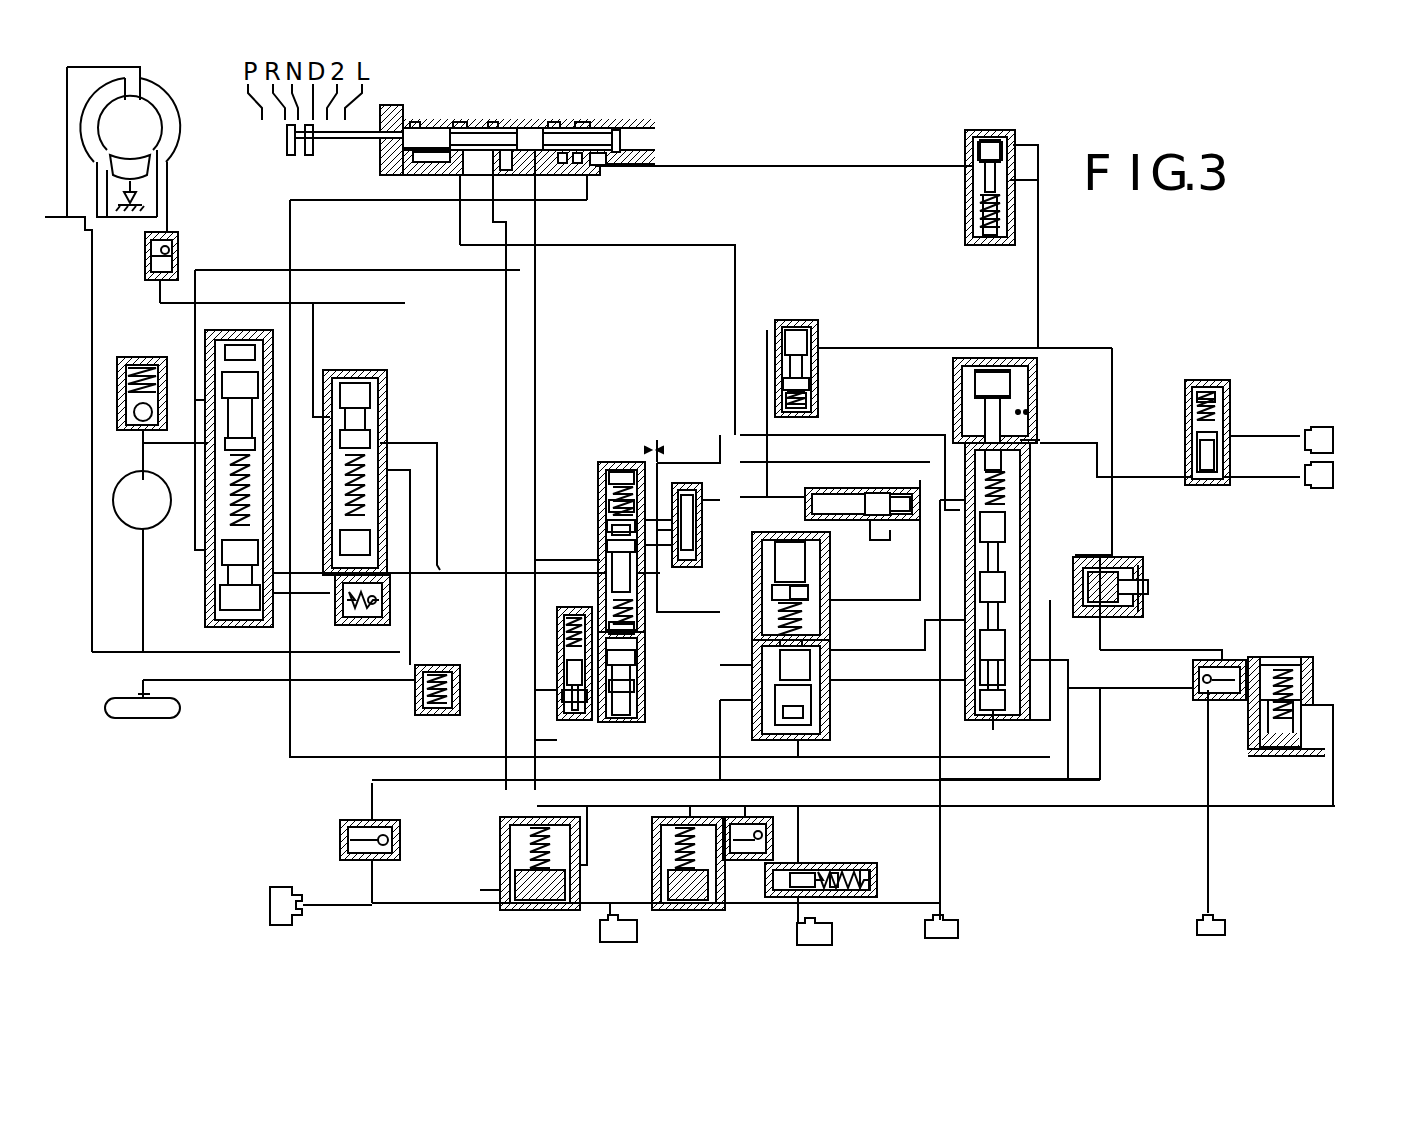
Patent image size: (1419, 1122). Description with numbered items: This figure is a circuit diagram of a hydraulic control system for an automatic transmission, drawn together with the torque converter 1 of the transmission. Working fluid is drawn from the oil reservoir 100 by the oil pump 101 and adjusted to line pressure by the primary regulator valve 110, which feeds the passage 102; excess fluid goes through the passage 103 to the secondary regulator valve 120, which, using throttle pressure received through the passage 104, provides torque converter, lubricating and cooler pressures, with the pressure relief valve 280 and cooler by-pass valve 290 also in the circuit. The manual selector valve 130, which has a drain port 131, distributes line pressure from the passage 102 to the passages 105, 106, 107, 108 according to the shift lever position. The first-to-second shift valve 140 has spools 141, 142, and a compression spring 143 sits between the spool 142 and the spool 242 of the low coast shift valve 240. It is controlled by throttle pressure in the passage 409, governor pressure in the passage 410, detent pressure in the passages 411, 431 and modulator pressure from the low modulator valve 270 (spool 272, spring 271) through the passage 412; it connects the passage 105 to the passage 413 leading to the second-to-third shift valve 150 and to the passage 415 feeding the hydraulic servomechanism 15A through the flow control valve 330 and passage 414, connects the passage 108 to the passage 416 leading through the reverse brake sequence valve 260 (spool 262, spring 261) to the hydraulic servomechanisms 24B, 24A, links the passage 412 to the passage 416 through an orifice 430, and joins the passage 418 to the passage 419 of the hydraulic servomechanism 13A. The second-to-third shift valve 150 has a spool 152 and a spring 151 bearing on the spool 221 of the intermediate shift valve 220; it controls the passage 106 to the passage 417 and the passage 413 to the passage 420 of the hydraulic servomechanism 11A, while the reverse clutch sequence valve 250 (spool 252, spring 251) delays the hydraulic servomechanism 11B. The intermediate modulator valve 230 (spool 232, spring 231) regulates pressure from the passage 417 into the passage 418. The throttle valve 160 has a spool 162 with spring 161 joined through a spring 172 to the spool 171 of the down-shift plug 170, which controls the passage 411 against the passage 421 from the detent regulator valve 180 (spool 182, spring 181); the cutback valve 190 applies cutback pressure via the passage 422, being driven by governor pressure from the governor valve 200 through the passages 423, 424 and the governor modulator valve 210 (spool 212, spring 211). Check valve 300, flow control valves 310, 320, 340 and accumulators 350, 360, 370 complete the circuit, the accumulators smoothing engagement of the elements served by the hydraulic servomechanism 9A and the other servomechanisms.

The torque converter 1 is at (180, 101).
The oil reservoir 100 is at (122, 718).
The oil pump 101 is at (122, 515).
The passage 102 is at (365, 270).
The passage 103 is at (318, 336).
The passage 104 is at (500, 575).
The passage 105 is at (506, 378).
The passage 106 is at (638, 245).
The passage 107 is at (662, 166).
The passage 108 is at (590, 200).
The primary regulator valve 110 is at (205, 602).
The secondary regulator valve 120 is at (380, 402).
The manual selector valve 130 is at (500, 126).
The drain port 131 is at (600, 125).
The 1-2 shift valve 140 is at (1015, 732).
The spool 141 is at (1005, 683).
The spool 142 is at (985, 576).
The compression spring 143 is at (1008, 500).
The 2-3 shift valve 150 is at (815, 750).
The compression spring 151 is at (805, 627).
The spool 152 is at (815, 712).
The throttle valve 160 is at (605, 465).
The spring 161 is at (600, 495).
The spool 162 is at (605, 535).
The down-shift plug 170 is at (638, 714).
The spool 171 is at (640, 690).
The spring 172 is at (640, 628).
The detent regulator valve 180 is at (585, 695).
The spring 181 is at (578, 628).
The spool 182 is at (566, 706).
The cutback valve 190 is at (686, 570).
The governor valve 200 is at (1083, 557).
The governor modulator valve 210 is at (792, 315).
The spring 211 is at (805, 398).
The spool 212 is at (810, 345).
The intermediate shift valve 220 is at (785, 540).
The spool 221 is at (812, 590).
The intermediate modulator valve 230 is at (888, 482).
The spring 231 is at (820, 500).
The spool 232 is at (880, 490).
The low coast shift valve 240 is at (955, 392).
The spool 242 is at (992, 380).
The reverse clutch sequence valve 250 is at (850, 864).
The spring 251 is at (866, 878).
The spool 252 is at (840, 862).
The reverse brake sequence valve 260 is at (1210, 383).
The spring 261 is at (1215, 390).
The spool 262 is at (1240, 438).
The low modulator valve 270 is at (990, 130).
The spring 271 is at (982, 218).
The spool 272 is at (970, 152).
The pressure relief valve 280 is at (128, 358).
The cooler by-pass valve 290 is at (415, 695).
The check valve 300 is at (178, 262).
The flow control valve 310 is at (343, 838).
The flow control valve 320 is at (745, 865).
The flow control valve 330 is at (1235, 662).
The flow control valve 340 is at (338, 630).
The accumulator 350 is at (538, 908).
The accumulator 360 is at (690, 908).
The accumulator 370 is at (1286, 755).
The passage 409 is at (690, 462).
The passage 410 is at (945, 680).
The passage 411 is at (720, 665).
The passage 412 is at (1040, 283).
The passage 413 is at (920, 650).
The passage 414 is at (1208, 732).
The passage 415 is at (1200, 650).
The passage 416 is at (1170, 478).
The passage 417 is at (862, 534).
The passage 418 is at (912, 585).
The passage 419 is at (940, 866).
The passage 420 is at (745, 708).
The passage 421 is at (602, 700).
The passage 422 is at (668, 450).
The passage 423 is at (1112, 348).
The passage 424 is at (785, 462).
The orifice 430 is at (1030, 413).
The passage 431 is at (980, 445).
The hydraulic servomechanism 9A is at (268, 910).
The hydraulic servomechanism 11A is at (628, 928).
The hydraulic servomechanism 11B is at (830, 938).
The hydraulic servomechanism 13A is at (960, 925).
The hydraulic servomechanism 15A is at (1198, 928).
The hydraulic servomechanism 24A is at (1320, 428).
The hydraulic servomechanism 24B is at (1320, 490).